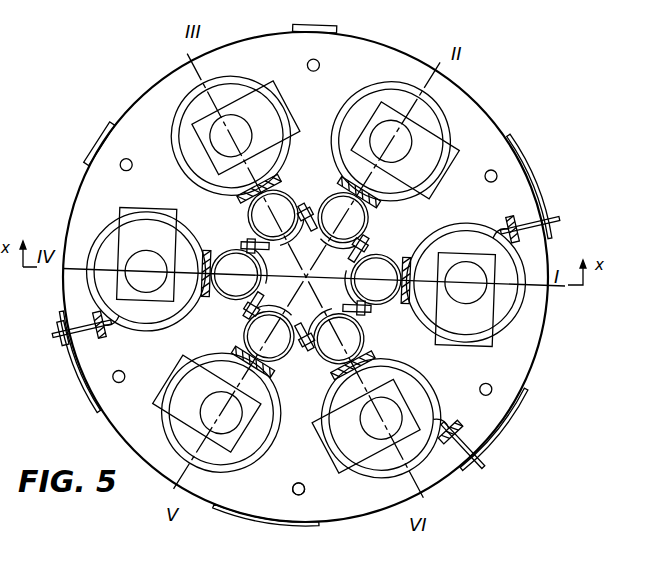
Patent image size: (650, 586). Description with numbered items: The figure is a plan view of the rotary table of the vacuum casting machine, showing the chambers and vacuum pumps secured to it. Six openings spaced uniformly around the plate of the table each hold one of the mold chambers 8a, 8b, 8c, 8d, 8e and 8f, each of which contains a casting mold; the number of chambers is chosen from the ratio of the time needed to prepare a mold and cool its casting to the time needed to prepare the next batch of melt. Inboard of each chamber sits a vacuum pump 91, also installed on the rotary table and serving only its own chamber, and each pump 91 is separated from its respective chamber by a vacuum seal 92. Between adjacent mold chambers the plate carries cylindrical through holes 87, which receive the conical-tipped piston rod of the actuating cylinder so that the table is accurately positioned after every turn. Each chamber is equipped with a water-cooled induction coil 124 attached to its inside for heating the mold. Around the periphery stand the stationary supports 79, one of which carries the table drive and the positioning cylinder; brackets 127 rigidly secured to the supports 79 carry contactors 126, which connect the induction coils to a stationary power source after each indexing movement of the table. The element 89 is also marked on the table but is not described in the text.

The mold chamber 8a is at (190, 245).
The mold chamber 8b is at (270, 433).
The mold chamber 8c is at (417, 450).
The mold chamber 8d is at (505, 306).
The mold chamber 8e is at (432, 125).
The mold chamber 8f is at (237, 88).
The vacuum pump 91 is at (379, 257).
The vacuum seal 92 is at (259, 255).
The support 79 is at (527, 390).
The cylindrical through hole 87 is at (304, 492).
The tab 89 is at (320, 16).
The water-cooled induction coil 124 is at (447, 425).
The contactor 126 is at (455, 431).
The bracket 127 is at (481, 462).